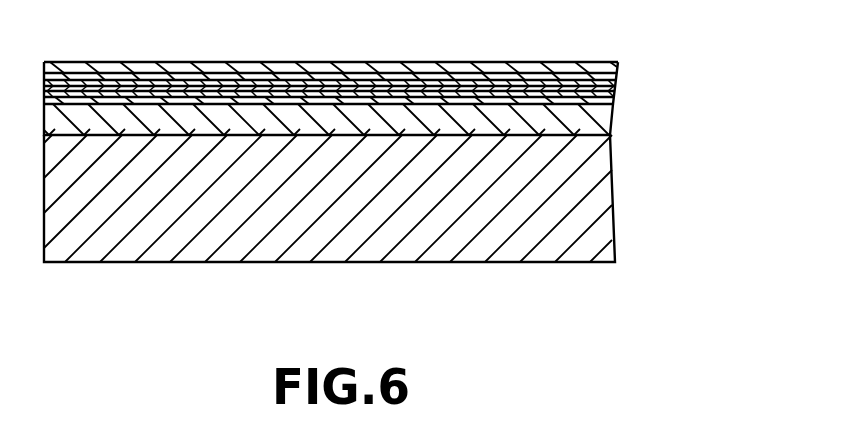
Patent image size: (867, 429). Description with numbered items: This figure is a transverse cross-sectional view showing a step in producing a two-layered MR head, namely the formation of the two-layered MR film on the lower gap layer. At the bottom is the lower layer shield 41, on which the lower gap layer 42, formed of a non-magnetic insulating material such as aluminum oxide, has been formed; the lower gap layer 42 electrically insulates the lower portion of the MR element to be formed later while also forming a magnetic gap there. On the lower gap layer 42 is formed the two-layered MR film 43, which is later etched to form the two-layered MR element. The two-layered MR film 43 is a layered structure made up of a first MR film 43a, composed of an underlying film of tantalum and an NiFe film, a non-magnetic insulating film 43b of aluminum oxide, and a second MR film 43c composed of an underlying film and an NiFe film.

The lower layer shield 41 is at (610, 185).
The lower gap layer 42 is at (610, 133).
The two-layered MR film 43 is at (419, 72).
The first MR film 43a is at (552, 62).
The non-magnetic insulating film 43b is at (618, 93).
The second MR film 43c is at (618, 80).